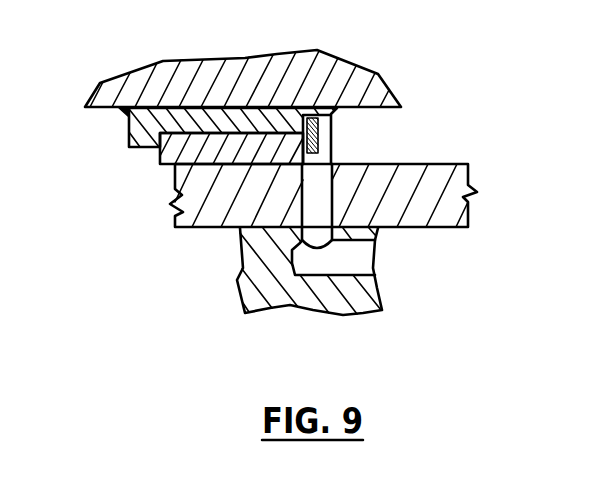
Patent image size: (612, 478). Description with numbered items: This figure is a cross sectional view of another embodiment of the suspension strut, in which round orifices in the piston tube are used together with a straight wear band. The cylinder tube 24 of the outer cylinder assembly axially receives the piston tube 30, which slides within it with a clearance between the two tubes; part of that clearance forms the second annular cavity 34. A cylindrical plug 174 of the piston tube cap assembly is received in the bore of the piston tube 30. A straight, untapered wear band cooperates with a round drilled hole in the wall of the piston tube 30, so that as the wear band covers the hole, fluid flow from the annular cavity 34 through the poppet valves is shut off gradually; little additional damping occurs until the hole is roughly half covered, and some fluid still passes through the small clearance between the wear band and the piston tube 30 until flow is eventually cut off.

The cylinder tube 24 is at (369, 73).
The second annular cavity 34 is at (466, 150).
The piston tube 30 is at (185, 211).
The cylindrical plug 174 is at (247, 270).